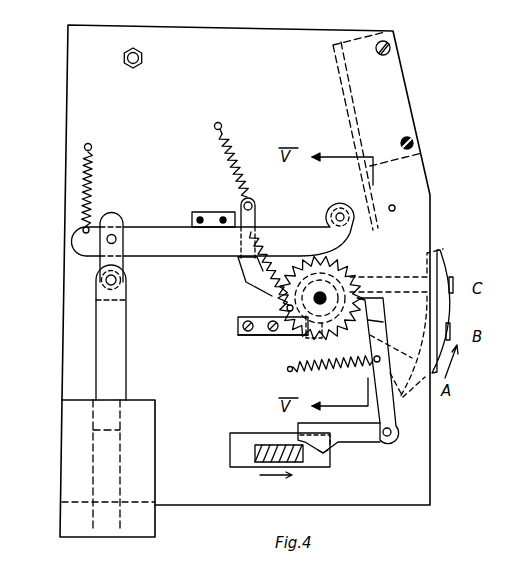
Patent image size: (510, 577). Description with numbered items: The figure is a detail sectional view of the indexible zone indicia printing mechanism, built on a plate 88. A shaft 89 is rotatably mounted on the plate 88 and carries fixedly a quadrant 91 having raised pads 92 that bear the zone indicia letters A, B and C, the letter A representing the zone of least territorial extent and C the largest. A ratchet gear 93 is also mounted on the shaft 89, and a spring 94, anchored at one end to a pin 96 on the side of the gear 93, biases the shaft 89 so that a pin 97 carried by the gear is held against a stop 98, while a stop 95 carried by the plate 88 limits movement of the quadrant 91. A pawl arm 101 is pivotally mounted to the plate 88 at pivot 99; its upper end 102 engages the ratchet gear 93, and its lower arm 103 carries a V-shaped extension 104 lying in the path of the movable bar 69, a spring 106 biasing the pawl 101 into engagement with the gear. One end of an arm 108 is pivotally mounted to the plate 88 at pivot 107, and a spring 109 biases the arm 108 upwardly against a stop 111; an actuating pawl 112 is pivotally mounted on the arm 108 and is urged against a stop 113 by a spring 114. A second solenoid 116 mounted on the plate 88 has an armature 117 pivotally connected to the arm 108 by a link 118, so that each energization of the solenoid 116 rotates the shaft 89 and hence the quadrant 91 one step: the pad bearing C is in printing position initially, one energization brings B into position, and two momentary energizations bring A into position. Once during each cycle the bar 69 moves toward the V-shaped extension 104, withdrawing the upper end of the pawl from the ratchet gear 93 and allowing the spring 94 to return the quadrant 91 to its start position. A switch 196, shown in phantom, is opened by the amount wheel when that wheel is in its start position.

The bar 69 is at (262, 447).
The plate 88 is at (415, 486).
The shaft 89 is at (326, 295).
The quadrant 91 is at (446, 262).
The raised pads 92 is at (452, 328).
The ratchet gear 93 is at (343, 266).
The spring 94 is at (258, 279).
The stop 95 is at (396, 207).
The pin 96 is at (288, 310).
The pin 97 is at (308, 347).
The stop 98 is at (258, 330).
The pivot 99 is at (386, 438).
The pawl arm 101 is at (397, 413).
The upper end of arm 102 is at (380, 331).
The lower arm 103 is at (363, 440).
The V-shaped extension 104 is at (323, 453).
The spring 106 is at (352, 366).
The pivot 107 is at (340, 205).
The arm 108 is at (178, 248).
The spring 109 is at (92, 190).
The stop 111 is at (215, 212).
The actuating pawl 112 is at (256, 214).
The stop 113 is at (238, 220).
The spring 114 is at (215, 128).
The second solenoid 116 is at (145, 473).
The armature 117 is at (117, 364).
The link 118 is at (108, 262).
The switch 196 is at (352, 62).